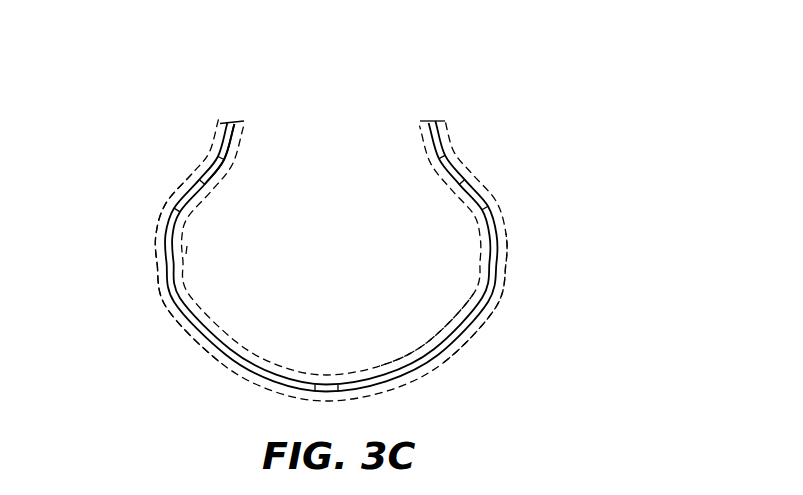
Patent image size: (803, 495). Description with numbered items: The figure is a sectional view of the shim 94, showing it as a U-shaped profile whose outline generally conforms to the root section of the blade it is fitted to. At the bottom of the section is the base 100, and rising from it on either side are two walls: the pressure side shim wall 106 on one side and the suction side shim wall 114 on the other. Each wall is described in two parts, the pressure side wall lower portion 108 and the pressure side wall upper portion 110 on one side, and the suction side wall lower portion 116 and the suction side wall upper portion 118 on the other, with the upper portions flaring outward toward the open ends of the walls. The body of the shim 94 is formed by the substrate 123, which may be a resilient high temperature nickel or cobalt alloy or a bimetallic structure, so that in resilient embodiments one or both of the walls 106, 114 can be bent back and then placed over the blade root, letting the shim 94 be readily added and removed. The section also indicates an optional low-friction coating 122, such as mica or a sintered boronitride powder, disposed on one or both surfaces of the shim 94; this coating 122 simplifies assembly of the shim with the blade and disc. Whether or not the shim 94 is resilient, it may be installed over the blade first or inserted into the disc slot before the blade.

The shim 94 is at (480, 92).
The base 100 is at (226, 397).
The pressure side shim wall 106 is at (528, 296).
The pressure side wall lower portion 108 is at (470, 378).
The pressure side wall upper portion 110 is at (515, 187).
The suction side shim wall 114 is at (90, 195).
The suction side wall lower portion 116 is at (144, 303).
The suction side wall upper portion 118 is at (152, 132).
The coating 122 is at (185, 250).
The substrate 123 is at (233, 121).